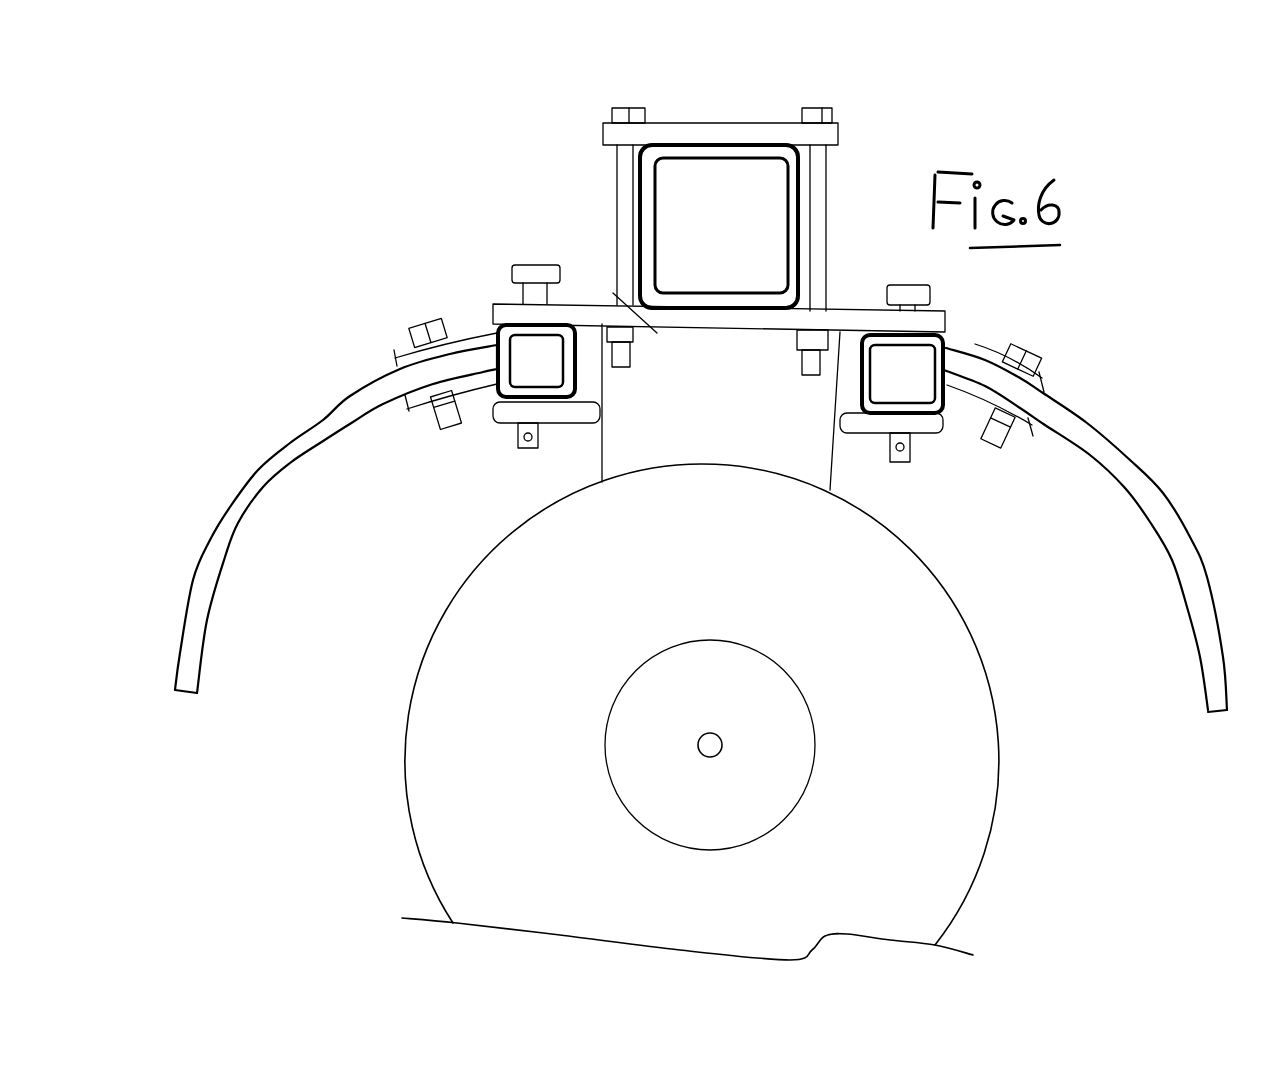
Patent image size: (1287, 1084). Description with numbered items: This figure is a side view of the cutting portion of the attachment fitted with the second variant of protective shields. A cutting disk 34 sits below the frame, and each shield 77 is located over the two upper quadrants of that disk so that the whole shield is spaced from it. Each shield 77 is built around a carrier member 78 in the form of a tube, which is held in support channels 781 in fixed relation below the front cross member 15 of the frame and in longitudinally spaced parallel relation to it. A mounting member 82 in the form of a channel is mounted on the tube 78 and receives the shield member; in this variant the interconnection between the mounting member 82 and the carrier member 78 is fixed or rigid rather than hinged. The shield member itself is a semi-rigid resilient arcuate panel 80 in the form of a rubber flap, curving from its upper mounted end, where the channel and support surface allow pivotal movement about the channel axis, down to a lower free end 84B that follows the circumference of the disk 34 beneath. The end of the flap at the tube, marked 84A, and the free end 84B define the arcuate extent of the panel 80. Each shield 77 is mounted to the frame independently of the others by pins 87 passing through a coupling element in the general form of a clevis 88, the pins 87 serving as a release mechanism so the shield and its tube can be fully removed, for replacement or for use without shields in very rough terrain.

The front cross member 15 is at (725, 153).
The disk 34 is at (997, 786).
The shield 77 is at (354, 381).
The carrier member 78 is at (528, 332).
The support channels 781 is at (969, 334).
The arcuate panel 80 is at (306, 428).
The mounting member 82 is at (468, 335).
The first end of tube 84A is at (500, 388).
The lower free end 84B is at (183, 693).
The pins 87 is at (528, 263).
The clevis 88 is at (567, 430).